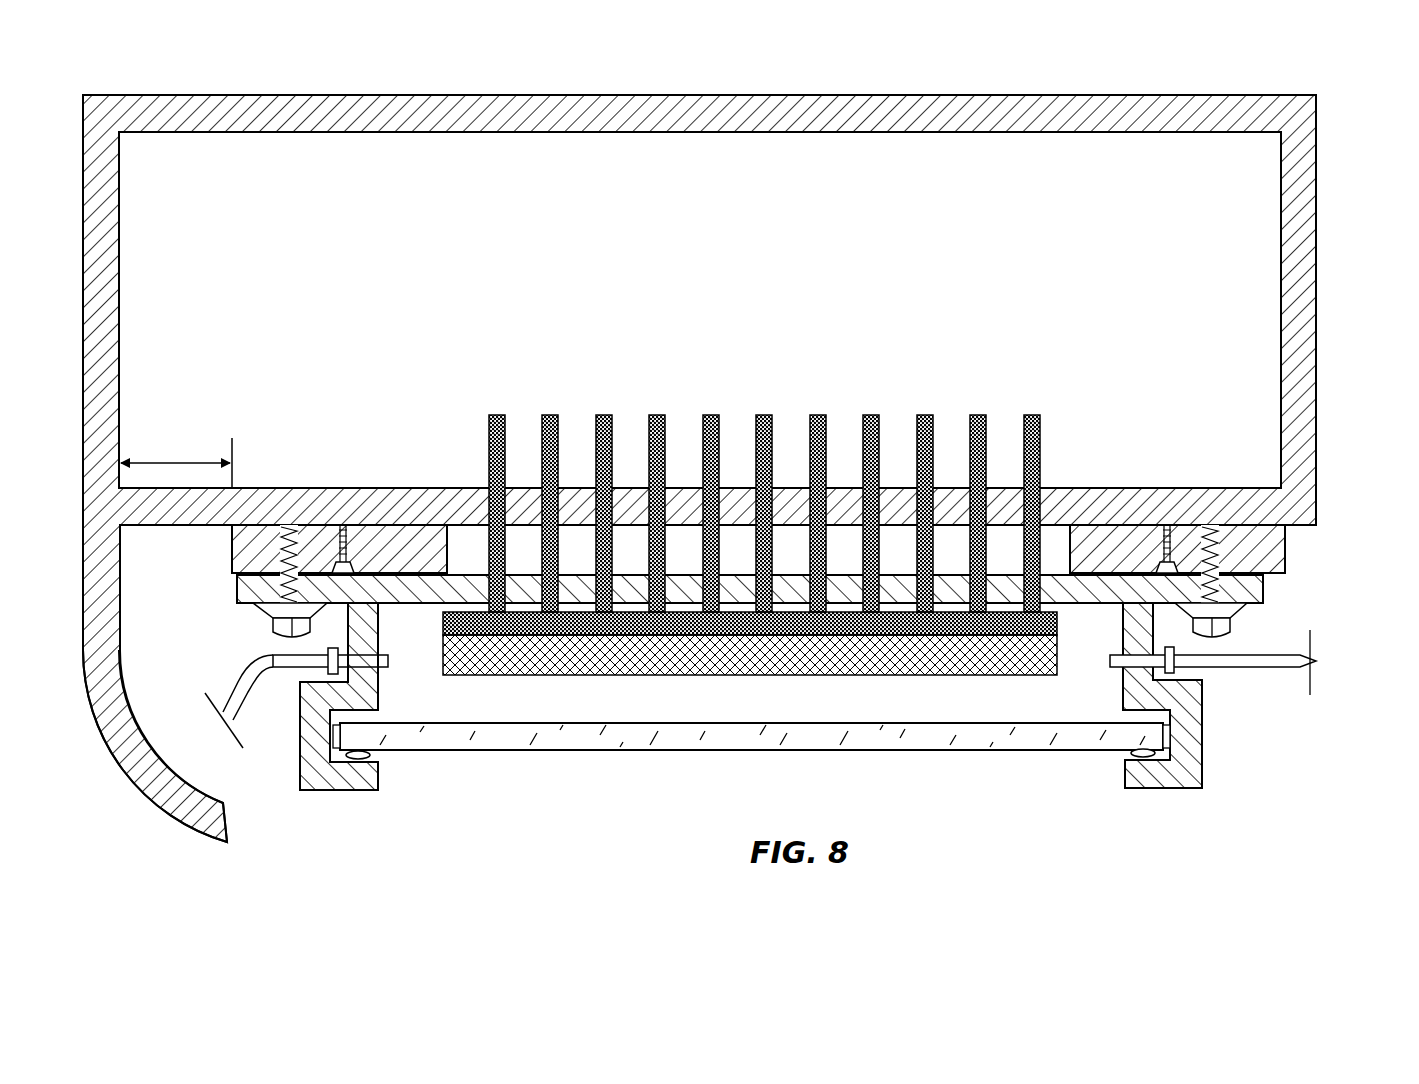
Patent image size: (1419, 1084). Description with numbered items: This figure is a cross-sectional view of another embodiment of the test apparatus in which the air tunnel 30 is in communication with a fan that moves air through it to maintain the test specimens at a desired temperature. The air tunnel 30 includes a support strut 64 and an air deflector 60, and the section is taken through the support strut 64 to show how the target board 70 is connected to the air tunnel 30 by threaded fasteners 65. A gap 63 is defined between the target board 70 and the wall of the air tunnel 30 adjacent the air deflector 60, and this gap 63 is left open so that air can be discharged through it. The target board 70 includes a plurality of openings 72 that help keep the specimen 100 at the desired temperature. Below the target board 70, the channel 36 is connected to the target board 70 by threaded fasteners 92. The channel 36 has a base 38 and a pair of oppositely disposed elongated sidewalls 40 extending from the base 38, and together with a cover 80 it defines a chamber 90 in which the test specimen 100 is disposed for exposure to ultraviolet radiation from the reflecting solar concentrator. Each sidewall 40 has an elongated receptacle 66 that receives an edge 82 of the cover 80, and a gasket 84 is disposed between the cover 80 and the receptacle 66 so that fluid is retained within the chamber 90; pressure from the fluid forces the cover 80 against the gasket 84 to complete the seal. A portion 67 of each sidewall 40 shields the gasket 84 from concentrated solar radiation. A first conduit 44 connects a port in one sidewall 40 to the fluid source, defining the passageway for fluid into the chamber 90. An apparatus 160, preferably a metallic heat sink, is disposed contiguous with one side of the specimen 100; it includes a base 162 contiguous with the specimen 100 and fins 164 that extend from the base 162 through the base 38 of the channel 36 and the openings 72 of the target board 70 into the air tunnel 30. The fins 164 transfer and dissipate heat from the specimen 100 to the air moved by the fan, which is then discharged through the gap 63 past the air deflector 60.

The air tunnel 30 is at (1321, 290).
The channel 36 is at (1019, 874).
The base 38 is at (240, 592).
The sidewall 40 is at (310, 700).
The first conduit 44 is at (1243, 667).
The air deflector 60 is at (205, 837).
The gap 63 is at (162, 463).
The support strut 64 is at (1078, 488).
The threaded fastener 65 is at (343, 525).
The elongated receptacle 66 is at (381, 716).
The portion of the sidewall 67 is at (358, 790).
The target board 70 is at (1285, 548).
The opening 72 is at (466, 535).
The cover 80 is at (1058, 752).
The edge 82 is at (340, 738).
The gasket 84 is at (368, 790).
The chamber 90 is at (865, 703).
The threaded fastener 92 is at (284, 637).
The specimen 100 is at (940, 675).
The apparatus 160 is at (850, 336).
The base 162 is at (440, 625).
The fin 164 is at (1029, 415).